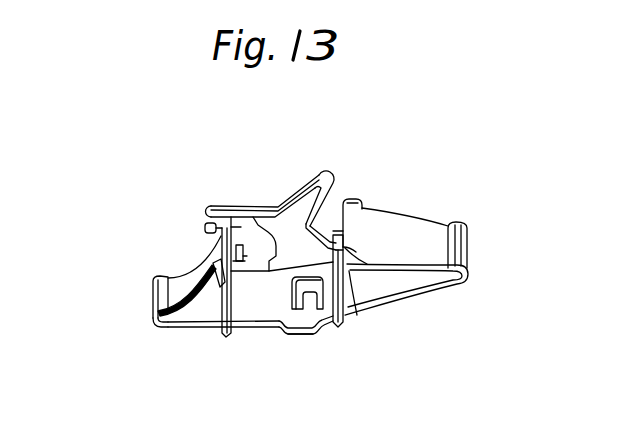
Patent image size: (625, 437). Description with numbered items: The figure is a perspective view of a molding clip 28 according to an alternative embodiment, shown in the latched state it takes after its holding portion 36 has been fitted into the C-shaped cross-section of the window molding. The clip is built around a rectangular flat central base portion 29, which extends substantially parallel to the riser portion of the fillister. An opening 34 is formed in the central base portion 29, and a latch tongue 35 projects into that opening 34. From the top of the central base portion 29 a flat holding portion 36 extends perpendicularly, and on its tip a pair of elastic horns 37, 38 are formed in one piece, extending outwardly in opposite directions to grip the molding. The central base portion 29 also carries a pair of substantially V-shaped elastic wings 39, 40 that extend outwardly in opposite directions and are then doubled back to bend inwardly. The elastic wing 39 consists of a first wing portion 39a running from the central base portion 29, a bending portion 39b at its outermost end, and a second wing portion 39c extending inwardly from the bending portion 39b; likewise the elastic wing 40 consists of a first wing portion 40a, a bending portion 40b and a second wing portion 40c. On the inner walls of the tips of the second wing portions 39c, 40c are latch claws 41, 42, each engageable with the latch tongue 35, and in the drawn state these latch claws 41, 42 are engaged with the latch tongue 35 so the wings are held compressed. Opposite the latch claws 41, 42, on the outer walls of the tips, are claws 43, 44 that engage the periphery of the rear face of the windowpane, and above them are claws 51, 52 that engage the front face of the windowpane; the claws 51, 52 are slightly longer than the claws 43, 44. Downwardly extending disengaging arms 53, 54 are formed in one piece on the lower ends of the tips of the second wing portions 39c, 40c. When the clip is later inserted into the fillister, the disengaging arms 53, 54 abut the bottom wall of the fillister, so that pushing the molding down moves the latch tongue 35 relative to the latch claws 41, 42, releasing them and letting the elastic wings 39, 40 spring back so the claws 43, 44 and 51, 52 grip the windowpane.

The molding clip 28 is at (438, 250).
The central base portion 29 is at (303, 335).
The opening 34 is at (259, 329).
The latch tongue 35 is at (292, 294).
The holding portion 36 is at (293, 232).
The elastic horn 37 is at (216, 205).
The elastic horn 38 is at (306, 181).
The elastic wing 39 is at (178, 286).
The first wing portion 39a is at (187, 327).
The bending portion 39b is at (152, 284).
The second wing portion 39c is at (191, 275).
The elastic wing 40 is at (438, 262).
The first wing portion 40a is at (409, 288).
The bending portion 40b is at (463, 241).
The second wing portion 40c is at (415, 236).
The latch claw 41 is at (253, 223).
The latch claw 42 is at (337, 230).
The claw 43 is at (157, 303).
The claw 44 is at (368, 258).
The claw 51 is at (205, 227).
The claw 52 is at (358, 198).
The disengaging arm 53 is at (222, 334).
The disengaging arm 54 is at (338, 328).